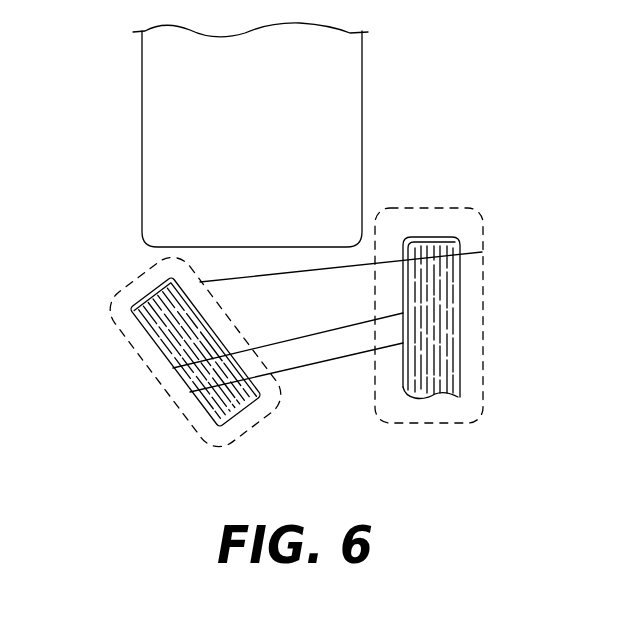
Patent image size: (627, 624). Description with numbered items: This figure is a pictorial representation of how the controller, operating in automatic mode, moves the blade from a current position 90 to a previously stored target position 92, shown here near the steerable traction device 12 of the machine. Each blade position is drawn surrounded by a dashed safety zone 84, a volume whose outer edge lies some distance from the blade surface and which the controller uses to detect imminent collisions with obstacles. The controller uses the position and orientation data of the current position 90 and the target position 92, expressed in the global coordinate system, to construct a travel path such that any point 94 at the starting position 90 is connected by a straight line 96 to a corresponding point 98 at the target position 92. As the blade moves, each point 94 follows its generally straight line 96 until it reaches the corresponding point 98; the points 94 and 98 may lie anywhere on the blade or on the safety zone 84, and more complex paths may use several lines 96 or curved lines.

The steerable traction device 12 is at (237, 149).
The safety zone 84 is at (141, 364).
The current position 90 is at (148, 350).
The target position 92 is at (459, 314).
The point 94 is at (200, 282).
The straight line 96 is at (293, 272).
The point 98 is at (482, 252).